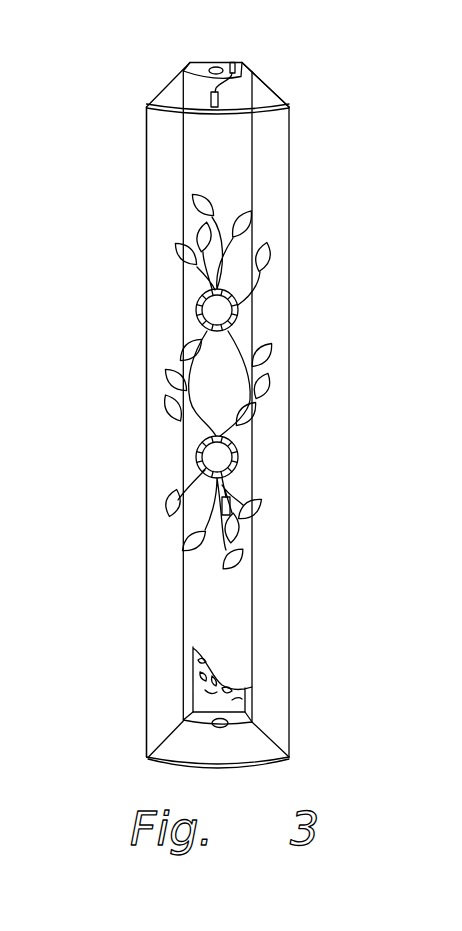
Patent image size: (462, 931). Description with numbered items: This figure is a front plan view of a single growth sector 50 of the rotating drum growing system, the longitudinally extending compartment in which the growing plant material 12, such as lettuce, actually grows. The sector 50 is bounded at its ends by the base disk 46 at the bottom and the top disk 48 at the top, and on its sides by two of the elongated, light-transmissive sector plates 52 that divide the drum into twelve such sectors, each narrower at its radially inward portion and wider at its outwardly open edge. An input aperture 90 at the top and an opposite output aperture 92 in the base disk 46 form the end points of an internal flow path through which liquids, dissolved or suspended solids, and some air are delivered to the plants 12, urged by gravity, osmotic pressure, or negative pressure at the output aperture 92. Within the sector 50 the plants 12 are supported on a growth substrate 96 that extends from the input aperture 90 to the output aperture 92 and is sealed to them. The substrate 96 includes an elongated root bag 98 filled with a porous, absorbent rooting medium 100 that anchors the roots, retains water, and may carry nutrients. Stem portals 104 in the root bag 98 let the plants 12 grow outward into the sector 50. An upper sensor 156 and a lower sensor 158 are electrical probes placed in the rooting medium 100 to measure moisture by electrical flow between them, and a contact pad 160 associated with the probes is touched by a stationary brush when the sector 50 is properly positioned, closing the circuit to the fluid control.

The growing plant material 12 is at (152, 341).
The base disk 46 is at (289, 758).
The top disk 48 is at (263, 93).
The growth sector 50 is at (130, 285).
The sector plate 52 is at (146, 173).
The input aperture 90 is at (190, 62).
The output aperture 92 is at (228, 727).
The growth substrate 96 is at (243, 62).
The root bag 98 is at (218, 593).
The rooting medium 100 is at (236, 63).
The stem portal 104 is at (237, 306).
The upper sensor 156 is at (209, 98).
The lower sensor 158 is at (232, 503).
The contact pad 160 is at (220, 65).